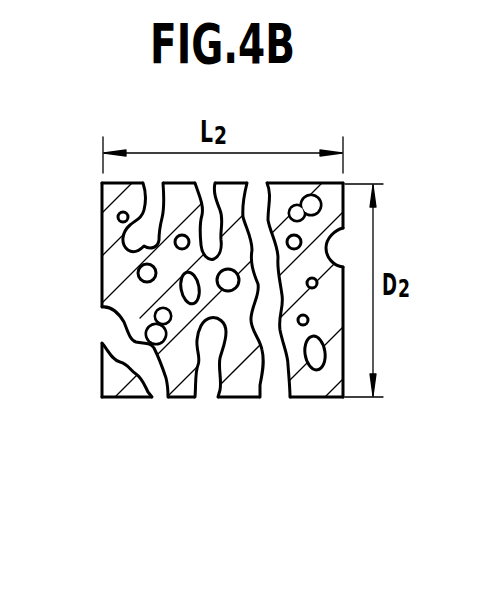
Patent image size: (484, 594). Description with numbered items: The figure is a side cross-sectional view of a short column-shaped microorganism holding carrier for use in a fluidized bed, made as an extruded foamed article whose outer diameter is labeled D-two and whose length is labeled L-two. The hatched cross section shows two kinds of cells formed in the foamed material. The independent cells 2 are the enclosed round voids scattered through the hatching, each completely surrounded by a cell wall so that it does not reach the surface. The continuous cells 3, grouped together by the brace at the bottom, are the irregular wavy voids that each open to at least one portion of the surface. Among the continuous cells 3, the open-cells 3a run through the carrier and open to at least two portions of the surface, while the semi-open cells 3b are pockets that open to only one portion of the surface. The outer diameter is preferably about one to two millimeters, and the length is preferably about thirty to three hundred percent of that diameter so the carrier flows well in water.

The independent cell 2 is at (318, 352).
The continuous cell 3 is at (174, 349).
The open-cell 3a is at (248, 455).
The semi-open cell 3b is at (128, 240).